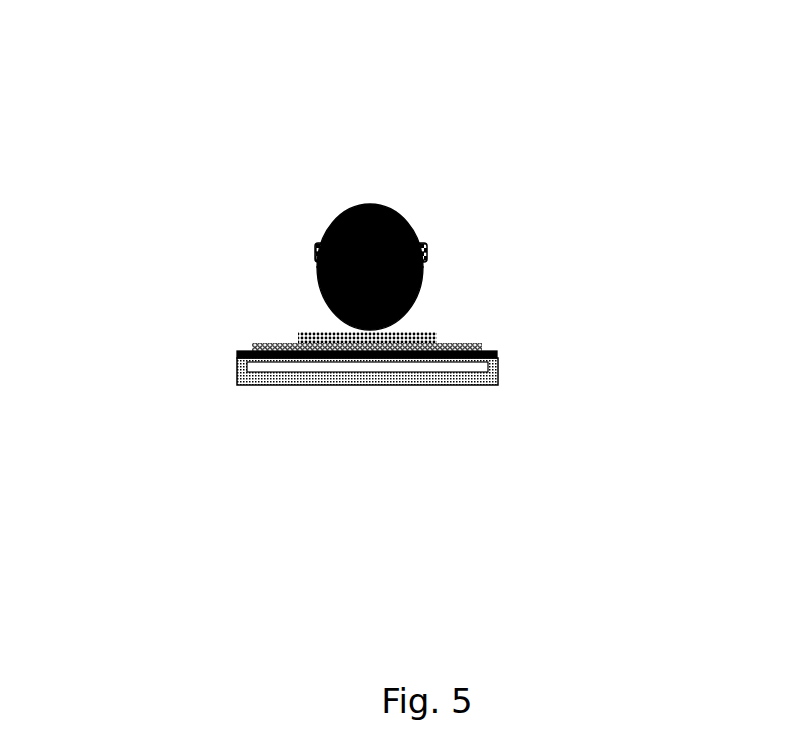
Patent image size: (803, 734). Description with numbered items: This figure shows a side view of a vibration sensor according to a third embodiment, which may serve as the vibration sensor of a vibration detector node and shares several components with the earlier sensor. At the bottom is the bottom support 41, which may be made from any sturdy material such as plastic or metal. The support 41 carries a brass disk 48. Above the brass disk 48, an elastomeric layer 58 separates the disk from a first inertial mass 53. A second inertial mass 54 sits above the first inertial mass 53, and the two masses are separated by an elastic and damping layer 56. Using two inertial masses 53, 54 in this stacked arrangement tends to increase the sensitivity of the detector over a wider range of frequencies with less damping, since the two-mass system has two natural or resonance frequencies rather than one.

The second inertial mass 54 is at (402, 215).
The first inertial mass 53 is at (423, 278).
The elastic and damping layer 56 is at (427, 248).
The elastomeric layer 58 is at (304, 332).
The brass disk 48 is at (493, 351).
The bottom support 41 is at (498, 383).